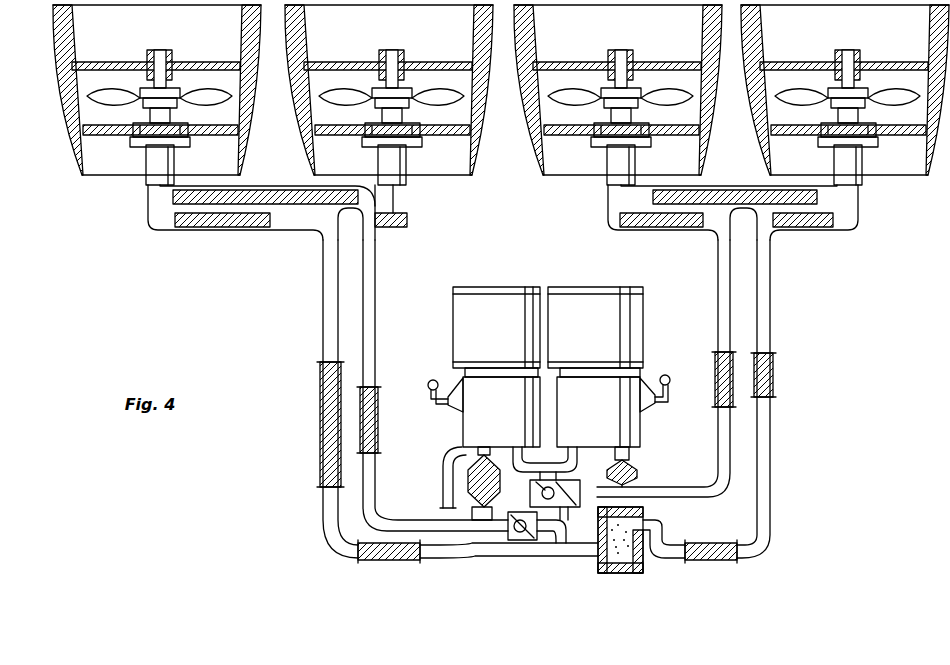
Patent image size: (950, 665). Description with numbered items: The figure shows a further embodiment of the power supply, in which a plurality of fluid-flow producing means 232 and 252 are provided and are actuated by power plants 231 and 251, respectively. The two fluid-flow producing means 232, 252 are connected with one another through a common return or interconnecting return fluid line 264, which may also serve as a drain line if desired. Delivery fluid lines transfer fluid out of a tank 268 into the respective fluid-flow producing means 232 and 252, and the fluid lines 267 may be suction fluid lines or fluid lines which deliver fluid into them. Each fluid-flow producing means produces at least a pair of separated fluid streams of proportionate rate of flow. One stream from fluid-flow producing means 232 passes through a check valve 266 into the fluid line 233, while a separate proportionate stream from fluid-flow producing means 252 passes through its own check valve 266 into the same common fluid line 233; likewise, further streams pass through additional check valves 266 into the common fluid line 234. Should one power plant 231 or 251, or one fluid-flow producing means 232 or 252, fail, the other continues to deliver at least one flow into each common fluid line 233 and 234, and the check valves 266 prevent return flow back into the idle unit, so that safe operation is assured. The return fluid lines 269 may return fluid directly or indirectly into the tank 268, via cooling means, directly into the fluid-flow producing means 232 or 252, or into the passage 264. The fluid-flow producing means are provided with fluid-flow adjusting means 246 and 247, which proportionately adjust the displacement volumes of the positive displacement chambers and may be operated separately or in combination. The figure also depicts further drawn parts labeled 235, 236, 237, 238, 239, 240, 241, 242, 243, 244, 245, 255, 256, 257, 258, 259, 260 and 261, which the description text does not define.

The power plant 231 is at (495, 292).
The fluid-flow producing means 232 is at (480, 388).
The fluid line 233 is at (378, 311).
The fluid line 234 is at (718, 304).
The motor 235 is at (402, 165).
The motor 236 is at (150, 175).
The fan blade 237 is at (437, 92).
The fan blade 238 is at (205, 92).
The duct 239 is at (299, 190).
The housing 240 is at (478, 152).
The housing wall 241 is at (62, 132).
The upper bearing 242 is at (147, 52).
The shaft 243 is at (160, 50).
The lower bearing 244 is at (140, 130).
The lower plate 245 is at (210, 136).
The fluid-flow adjusting means 246 is at (431, 380).
The fluid-flow adjusting means 247 is at (665, 375).
The power plant 251 is at (592, 300).
The fluid-flow producing means 252 is at (575, 380).
The motor 255 is at (613, 168).
The motor 256 is at (858, 170).
The fan blade 257 is at (578, 92).
The fan blade 258 is at (893, 92).
The duct 259 is at (800, 208).
The housing 260 is at (522, 105).
The housing wall 261 is at (758, 128).
The return fluid line 264 is at (556, 468).
The check valve 266 is at (468, 485).
The fluid line 267 is at (664, 520).
The tank 268 is at (620, 573).
The return fluid line 269 is at (323, 334).